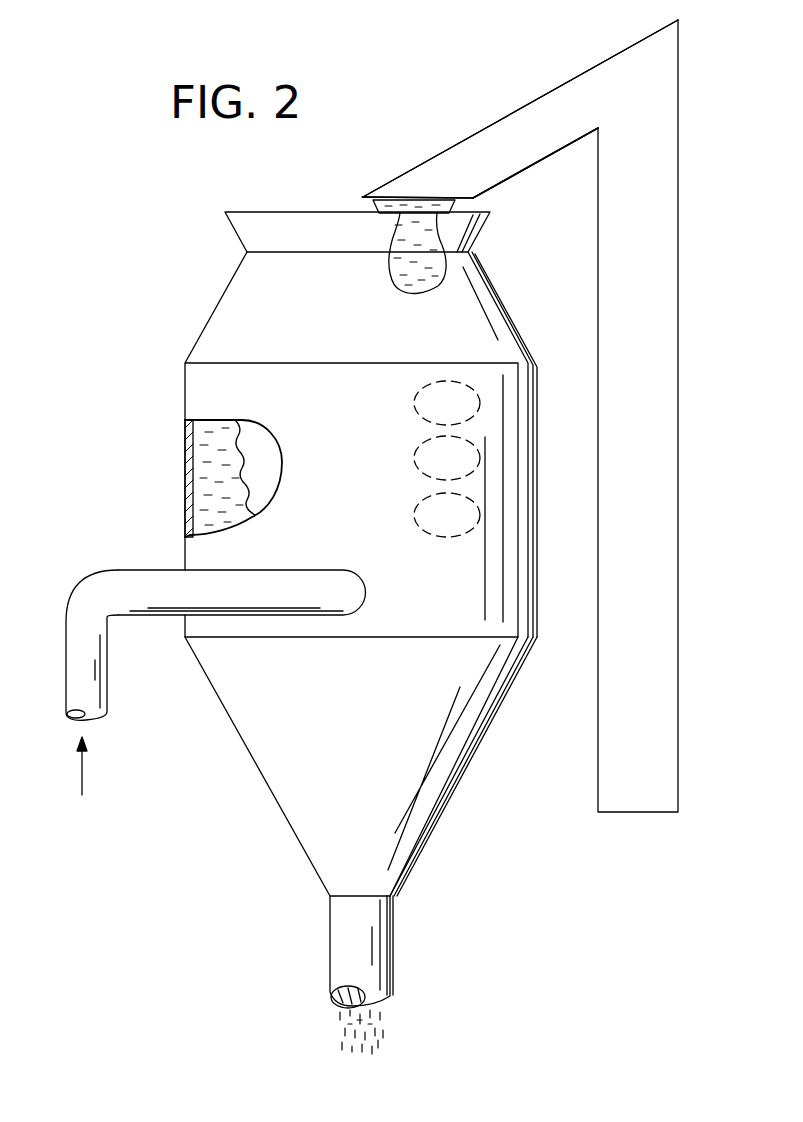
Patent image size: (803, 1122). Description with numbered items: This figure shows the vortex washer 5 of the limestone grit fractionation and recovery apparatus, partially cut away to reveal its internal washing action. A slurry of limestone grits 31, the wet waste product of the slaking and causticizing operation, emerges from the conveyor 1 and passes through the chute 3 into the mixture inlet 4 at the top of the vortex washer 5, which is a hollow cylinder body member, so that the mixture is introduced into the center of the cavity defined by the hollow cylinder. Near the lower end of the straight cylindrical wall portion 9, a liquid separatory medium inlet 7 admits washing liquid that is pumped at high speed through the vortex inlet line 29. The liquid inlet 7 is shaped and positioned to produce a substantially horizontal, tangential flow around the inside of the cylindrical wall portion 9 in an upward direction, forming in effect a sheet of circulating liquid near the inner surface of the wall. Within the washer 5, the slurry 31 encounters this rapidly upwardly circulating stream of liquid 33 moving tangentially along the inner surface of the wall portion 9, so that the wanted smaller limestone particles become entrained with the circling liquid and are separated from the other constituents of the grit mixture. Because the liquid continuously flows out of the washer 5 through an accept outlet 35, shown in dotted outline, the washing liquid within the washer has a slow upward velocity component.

The conveyor 1 is at (606, 247).
The chute 3 is at (470, 150).
The mixture inlet 4 is at (225, 211).
The vortex washer 5 is at (175, 457).
The liquid separatory medium inlet 7 is at (367, 585).
The straight cylindrical wall portion 9 is at (338, 451).
The vortex inlet line 29 is at (118, 570).
The slurry of limestone grits 31 is at (417, 213).
The circulating stream of liquid 33 is at (242, 495).
The accept outlet 35 is at (435, 455).